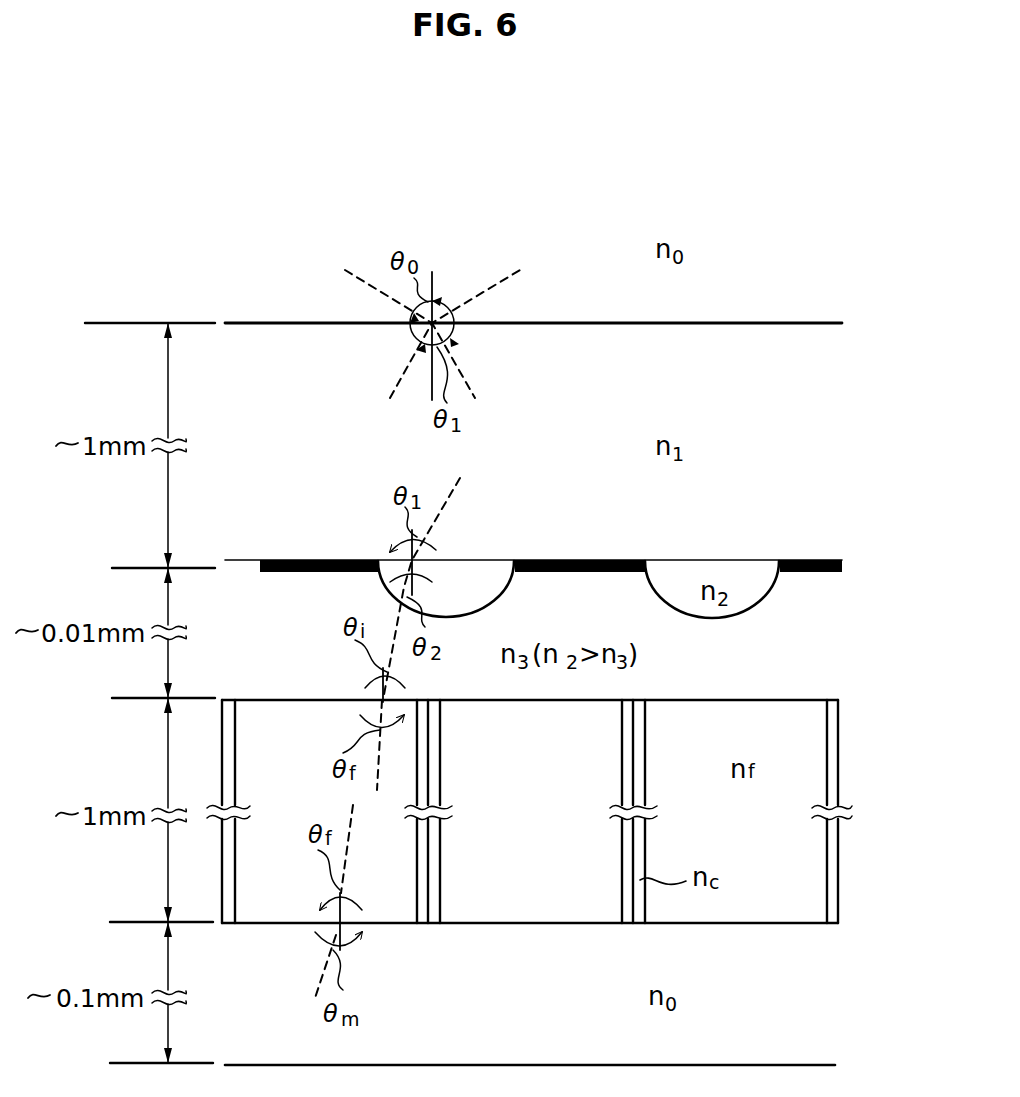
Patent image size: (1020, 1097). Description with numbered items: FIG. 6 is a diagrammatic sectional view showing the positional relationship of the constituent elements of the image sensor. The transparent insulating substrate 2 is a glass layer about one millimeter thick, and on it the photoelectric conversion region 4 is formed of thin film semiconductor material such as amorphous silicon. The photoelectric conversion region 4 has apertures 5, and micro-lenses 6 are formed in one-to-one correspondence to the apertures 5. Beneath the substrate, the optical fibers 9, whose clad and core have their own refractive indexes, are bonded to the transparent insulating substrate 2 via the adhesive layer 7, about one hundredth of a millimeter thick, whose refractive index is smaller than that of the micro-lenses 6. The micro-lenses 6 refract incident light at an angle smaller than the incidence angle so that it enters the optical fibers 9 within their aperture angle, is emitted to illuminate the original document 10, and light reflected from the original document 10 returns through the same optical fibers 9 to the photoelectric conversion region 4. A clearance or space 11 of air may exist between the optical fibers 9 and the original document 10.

The transparent insulating substrate 2 is at (815, 445).
The photoelectric conversion region 4 is at (815, 560).
The aperture 5 is at (717, 560).
The micro-lens 6 is at (750, 590).
The adhesive layer 7 is at (815, 640).
The optical fiber 9 is at (803, 758).
The original document 10 is at (803, 1065).
The clearance or space 11 is at (800, 997).